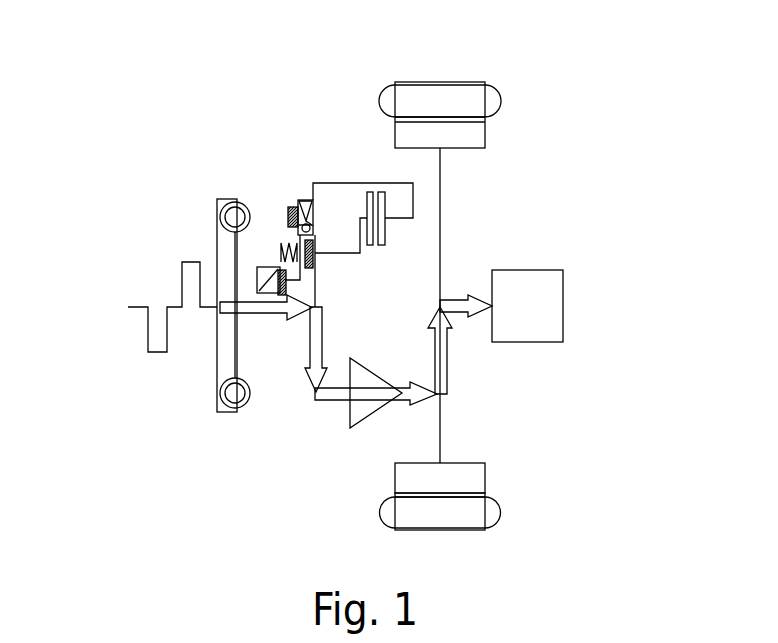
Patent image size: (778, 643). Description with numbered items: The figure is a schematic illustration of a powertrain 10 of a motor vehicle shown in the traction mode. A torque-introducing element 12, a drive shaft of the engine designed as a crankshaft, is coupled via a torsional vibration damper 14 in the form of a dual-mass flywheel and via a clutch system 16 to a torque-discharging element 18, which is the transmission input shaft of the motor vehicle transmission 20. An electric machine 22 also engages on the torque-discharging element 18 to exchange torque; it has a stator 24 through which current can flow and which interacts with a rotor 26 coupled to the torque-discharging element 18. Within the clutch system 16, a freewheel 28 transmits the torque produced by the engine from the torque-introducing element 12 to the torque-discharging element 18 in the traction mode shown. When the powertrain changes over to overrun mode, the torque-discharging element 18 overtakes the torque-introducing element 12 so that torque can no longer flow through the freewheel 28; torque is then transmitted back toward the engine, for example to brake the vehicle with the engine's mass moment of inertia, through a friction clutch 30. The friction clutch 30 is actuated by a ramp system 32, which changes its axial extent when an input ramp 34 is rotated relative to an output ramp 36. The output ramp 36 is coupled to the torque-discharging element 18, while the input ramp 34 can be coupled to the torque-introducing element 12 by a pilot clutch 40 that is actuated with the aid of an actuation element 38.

The powertrain 10 is at (190, 170).
The torque-introducing element 12 is at (130, 306).
The torsional vibration damper 14 is at (217, 375).
The clutch system 16 is at (287, 397).
The torque-discharging element 18 is at (463, 302).
The motor vehicle transmission 20 is at (550, 307).
The electric machine 22 is at (499, 125).
The stator 24 is at (460, 518).
The rotor 26 is at (470, 480).
The freewheel 28 is at (362, 418).
The friction clutch 30 is at (378, 193).
The ramp system 32 is at (299, 193).
The input ramp 34 is at (294, 206).
The output ramp 36 is at (309, 198).
The actuation element 38 is at (262, 268).
The pilot clutch 40 is at (276, 230).